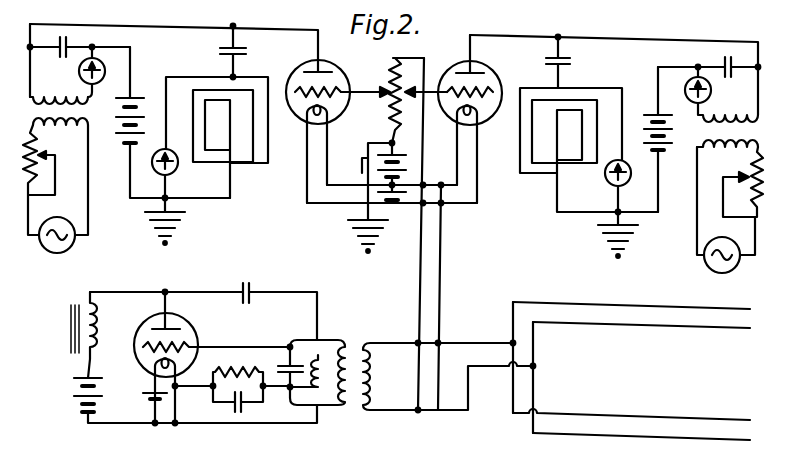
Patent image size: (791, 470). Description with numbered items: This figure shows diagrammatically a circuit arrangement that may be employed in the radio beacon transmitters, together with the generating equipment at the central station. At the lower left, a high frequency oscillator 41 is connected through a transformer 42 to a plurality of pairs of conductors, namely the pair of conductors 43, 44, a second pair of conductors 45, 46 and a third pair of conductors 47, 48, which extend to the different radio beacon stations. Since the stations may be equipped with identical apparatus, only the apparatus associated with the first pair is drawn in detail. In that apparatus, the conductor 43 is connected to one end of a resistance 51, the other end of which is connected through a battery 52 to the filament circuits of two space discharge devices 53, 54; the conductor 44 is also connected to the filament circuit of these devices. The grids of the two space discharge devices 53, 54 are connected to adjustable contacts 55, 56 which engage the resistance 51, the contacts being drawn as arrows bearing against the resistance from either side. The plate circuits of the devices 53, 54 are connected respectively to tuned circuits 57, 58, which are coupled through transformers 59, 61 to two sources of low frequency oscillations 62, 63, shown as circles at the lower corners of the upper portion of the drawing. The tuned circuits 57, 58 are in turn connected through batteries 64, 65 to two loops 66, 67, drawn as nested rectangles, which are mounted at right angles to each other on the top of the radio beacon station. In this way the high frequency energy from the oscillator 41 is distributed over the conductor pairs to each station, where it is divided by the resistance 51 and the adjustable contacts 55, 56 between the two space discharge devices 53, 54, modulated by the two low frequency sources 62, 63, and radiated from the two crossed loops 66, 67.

The high frequency oscillator 41 is at (212, 357).
The transformer 42 is at (405, 364).
The conductor 43 is at (419, 295).
The conductor 44 is at (439, 296).
The conductor 45 is at (636, 305).
The conductor 46 is at (629, 330).
The conductor 47 is at (646, 413).
The conductor 48 is at (655, 441).
The resistance 51 is at (389, 70).
The battery 52 is at (393, 152).
The space discharge device 53 is at (297, 66).
The space discharge device 54 is at (490, 70).
The adjustable contact 55 is at (381, 97).
The adjustable contact 56 is at (408, 88).
The tuned circuit 57 is at (67, 75).
The tuned circuit 58 is at (721, 94).
The transformer 59 is at (30, 106).
The transformer 61 is at (759, 145).
The source of low frequency oscillations 62 is at (45, 249).
The source of low frequency oscillations 63 is at (740, 264).
The battery 64 is at (134, 98).
The battery 65 is at (653, 114).
The loop 66 is at (261, 168).
The loop 67 is at (530, 175).